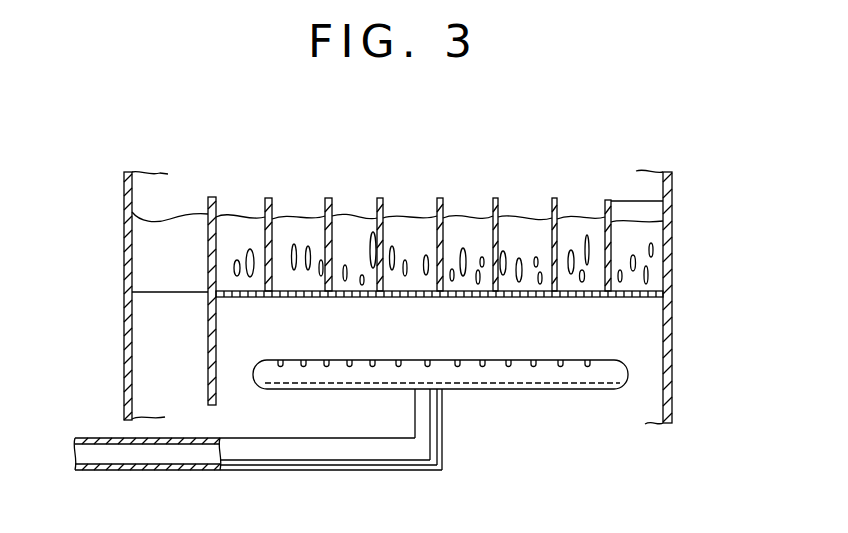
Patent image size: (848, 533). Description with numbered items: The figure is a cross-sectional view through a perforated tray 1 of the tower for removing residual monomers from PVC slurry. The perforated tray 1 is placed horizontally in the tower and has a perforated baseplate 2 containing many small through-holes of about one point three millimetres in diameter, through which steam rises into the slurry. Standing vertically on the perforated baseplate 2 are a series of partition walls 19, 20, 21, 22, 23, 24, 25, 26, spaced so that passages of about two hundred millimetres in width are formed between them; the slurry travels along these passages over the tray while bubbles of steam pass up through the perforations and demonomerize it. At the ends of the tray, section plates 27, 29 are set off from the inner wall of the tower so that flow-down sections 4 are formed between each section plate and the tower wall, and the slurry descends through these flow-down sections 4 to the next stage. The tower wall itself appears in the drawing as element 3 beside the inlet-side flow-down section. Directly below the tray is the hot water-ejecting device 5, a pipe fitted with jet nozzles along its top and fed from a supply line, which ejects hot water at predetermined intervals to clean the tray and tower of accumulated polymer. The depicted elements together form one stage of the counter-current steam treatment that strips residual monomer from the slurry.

The perforated tray 1 is at (162, 158).
The perforated baseplate 2 is at (243, 298).
The tank side wall 3 is at (123, 322).
The flow-down section 4 is at (160, 273).
The hot water-ejecting device 5 is at (518, 382).
The partition wall 19 is at (212, 196).
The partition wall 20 is at (269, 197).
The partition wall 21 is at (328, 197).
The partition wall 22 is at (380, 197).
The partition wall 23 is at (440, 197).
The partition wall 24 is at (496, 197).
The partition wall 25 is at (555, 197).
The partition wall 26 is at (608, 199).
The section plate 27 is at (653, 212).
The section plate 29 is at (148, 354).